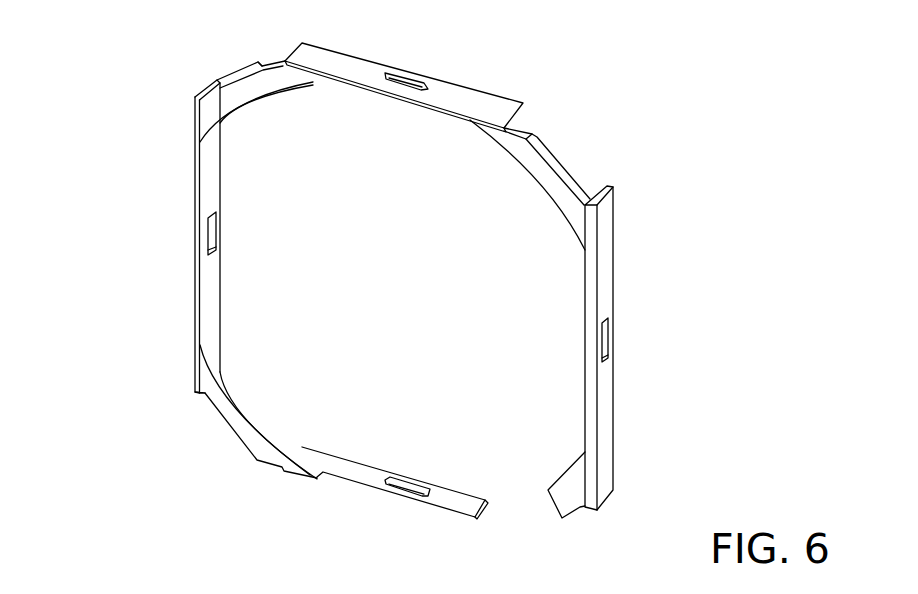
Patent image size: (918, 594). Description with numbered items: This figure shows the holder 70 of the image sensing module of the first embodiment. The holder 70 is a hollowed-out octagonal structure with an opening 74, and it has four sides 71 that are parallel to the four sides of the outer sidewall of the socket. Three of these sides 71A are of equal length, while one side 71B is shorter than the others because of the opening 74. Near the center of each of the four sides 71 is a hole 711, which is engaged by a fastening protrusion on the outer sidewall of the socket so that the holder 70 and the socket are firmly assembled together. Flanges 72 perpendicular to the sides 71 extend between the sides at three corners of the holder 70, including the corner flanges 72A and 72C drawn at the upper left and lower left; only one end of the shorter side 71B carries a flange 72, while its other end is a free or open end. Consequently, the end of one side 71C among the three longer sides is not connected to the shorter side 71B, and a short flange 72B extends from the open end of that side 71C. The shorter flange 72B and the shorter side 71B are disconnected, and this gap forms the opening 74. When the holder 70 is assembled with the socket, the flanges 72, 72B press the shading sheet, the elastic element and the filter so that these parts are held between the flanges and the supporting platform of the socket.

The holder 70 is at (63, 28).
The sides 71 is at (343, 63).
The sides 71A is at (206, 297).
The shorter side 71B is at (347, 472).
The side 71C is at (603, 287).
The holes 711 is at (605, 345).
The flanges 72 is at (552, 180).
The upper left connecting portion 72A is at (251, 74).
The short flange 72B is at (580, 470).
The lower left connecting portion 72C is at (261, 435).
The opening 74 is at (518, 505).